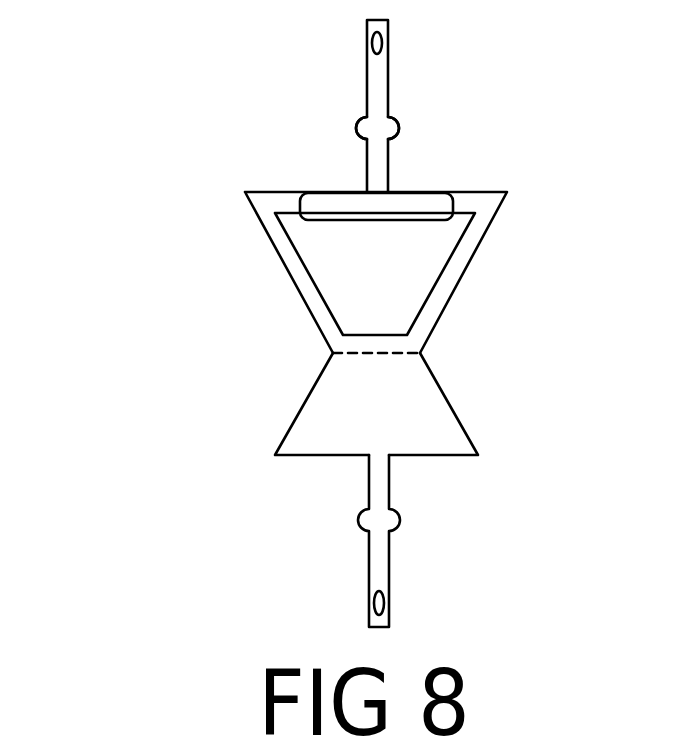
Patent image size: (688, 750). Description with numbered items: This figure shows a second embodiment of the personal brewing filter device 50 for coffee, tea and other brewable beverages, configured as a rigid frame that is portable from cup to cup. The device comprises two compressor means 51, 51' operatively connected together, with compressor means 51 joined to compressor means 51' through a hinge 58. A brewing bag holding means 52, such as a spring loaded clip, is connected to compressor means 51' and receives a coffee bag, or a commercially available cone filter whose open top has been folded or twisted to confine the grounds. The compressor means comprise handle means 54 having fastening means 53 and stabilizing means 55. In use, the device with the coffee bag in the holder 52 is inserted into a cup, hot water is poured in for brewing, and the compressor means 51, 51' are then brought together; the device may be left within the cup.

The personal brewing filter device 50 is at (137, 326).
The compressor means 51 is at (320, 404).
The compressor means 51' is at (321, 259).
The brewing bag holding means 52 is at (377, 210).
The fastening means 53 is at (383, 43).
The handle means 54 is at (367, 78).
The stabilizing means 55 is at (399, 128).
The hinge 58 is at (392, 335).